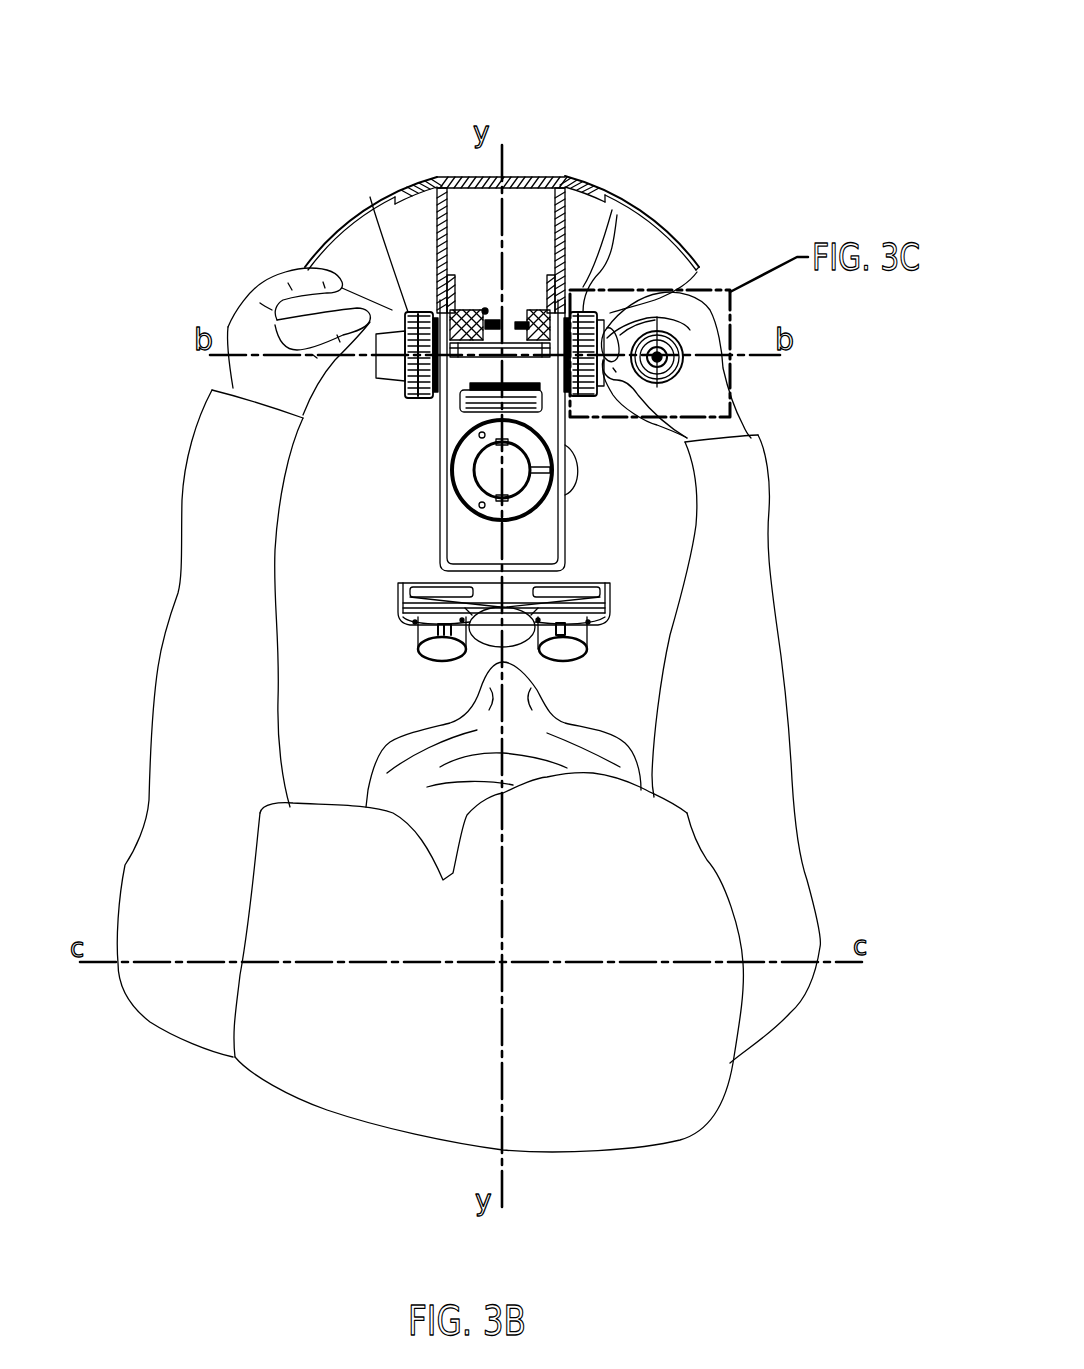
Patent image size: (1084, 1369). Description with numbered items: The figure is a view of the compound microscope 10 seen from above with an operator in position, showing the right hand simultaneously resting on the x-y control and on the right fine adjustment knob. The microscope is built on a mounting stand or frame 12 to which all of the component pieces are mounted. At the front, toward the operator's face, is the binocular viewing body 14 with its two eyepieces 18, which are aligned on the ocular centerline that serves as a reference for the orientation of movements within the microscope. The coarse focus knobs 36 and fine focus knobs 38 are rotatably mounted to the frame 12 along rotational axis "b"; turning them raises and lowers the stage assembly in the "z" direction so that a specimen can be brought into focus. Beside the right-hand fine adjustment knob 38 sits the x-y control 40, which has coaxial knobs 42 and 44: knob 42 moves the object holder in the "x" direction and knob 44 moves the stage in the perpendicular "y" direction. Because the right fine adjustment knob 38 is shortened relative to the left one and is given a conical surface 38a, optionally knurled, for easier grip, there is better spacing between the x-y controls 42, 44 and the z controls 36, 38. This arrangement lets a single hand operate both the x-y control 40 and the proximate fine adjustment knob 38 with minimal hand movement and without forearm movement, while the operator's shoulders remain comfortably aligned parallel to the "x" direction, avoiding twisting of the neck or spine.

The compound microscope 10 is at (673, 112).
The mounting stand or frame 12 is at (565, 170).
The viewing body 14 is at (393, 608).
The eyepieces 18 is at (430, 650).
The coarse focus knobs 36 is at (370, 197).
The fine focus knobs 38 is at (392, 310).
The conical surface 38a is at (617, 312).
The x-y control 40 is at (687, 312).
The knob 42 is at (673, 368).
The knob 44 is at (683, 336).